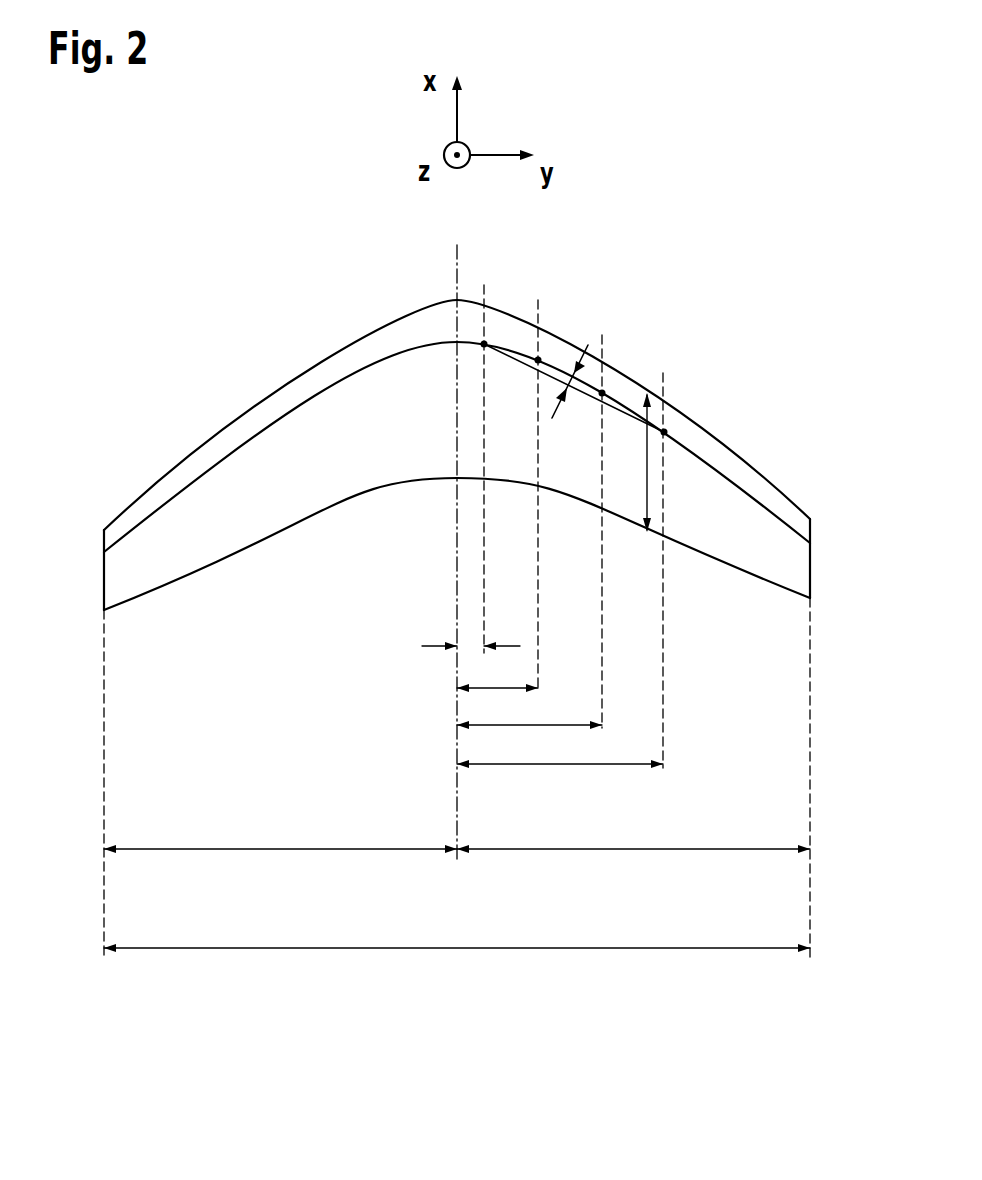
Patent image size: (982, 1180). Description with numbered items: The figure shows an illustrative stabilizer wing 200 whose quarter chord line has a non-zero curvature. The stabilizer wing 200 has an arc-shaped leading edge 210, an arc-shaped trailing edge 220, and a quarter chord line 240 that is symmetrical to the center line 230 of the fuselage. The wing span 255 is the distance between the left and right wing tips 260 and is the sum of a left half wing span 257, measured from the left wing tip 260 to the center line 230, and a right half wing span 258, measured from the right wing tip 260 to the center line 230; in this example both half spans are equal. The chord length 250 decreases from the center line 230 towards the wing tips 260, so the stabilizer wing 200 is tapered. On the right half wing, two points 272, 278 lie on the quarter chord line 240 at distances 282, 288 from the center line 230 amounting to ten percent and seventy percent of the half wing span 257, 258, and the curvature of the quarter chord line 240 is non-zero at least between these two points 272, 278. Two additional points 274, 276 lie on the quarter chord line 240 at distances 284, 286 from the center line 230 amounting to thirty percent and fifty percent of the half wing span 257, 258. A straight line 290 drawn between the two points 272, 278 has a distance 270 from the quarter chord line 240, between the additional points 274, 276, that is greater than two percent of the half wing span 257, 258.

The stabilizer wing 200 is at (222, 306).
The leading edge 210 is at (670, 402).
The trailing edge 220 is at (306, 523).
The center line 230 is at (455, 580).
The quarter chord line 240 is at (252, 435).
The chord length 250 is at (647, 483).
The wing span 255 is at (478, 950).
The left half wing span 257 is at (280, 852).
The right half wing span 258 is at (630, 852).
The wing tips 260 is at (104, 574).
The distance 270 is at (562, 347).
The point 272 is at (484, 342).
The additional point 274 is at (538, 359).
The additional point 276 is at (603, 392).
The point 278 is at (664, 432).
The distance 282 is at (470, 647).
The distance 284 is at (494, 688).
The distance 286 is at (530, 726).
The distance 288 is at (565, 766).
The straight line 290 is at (563, 396).